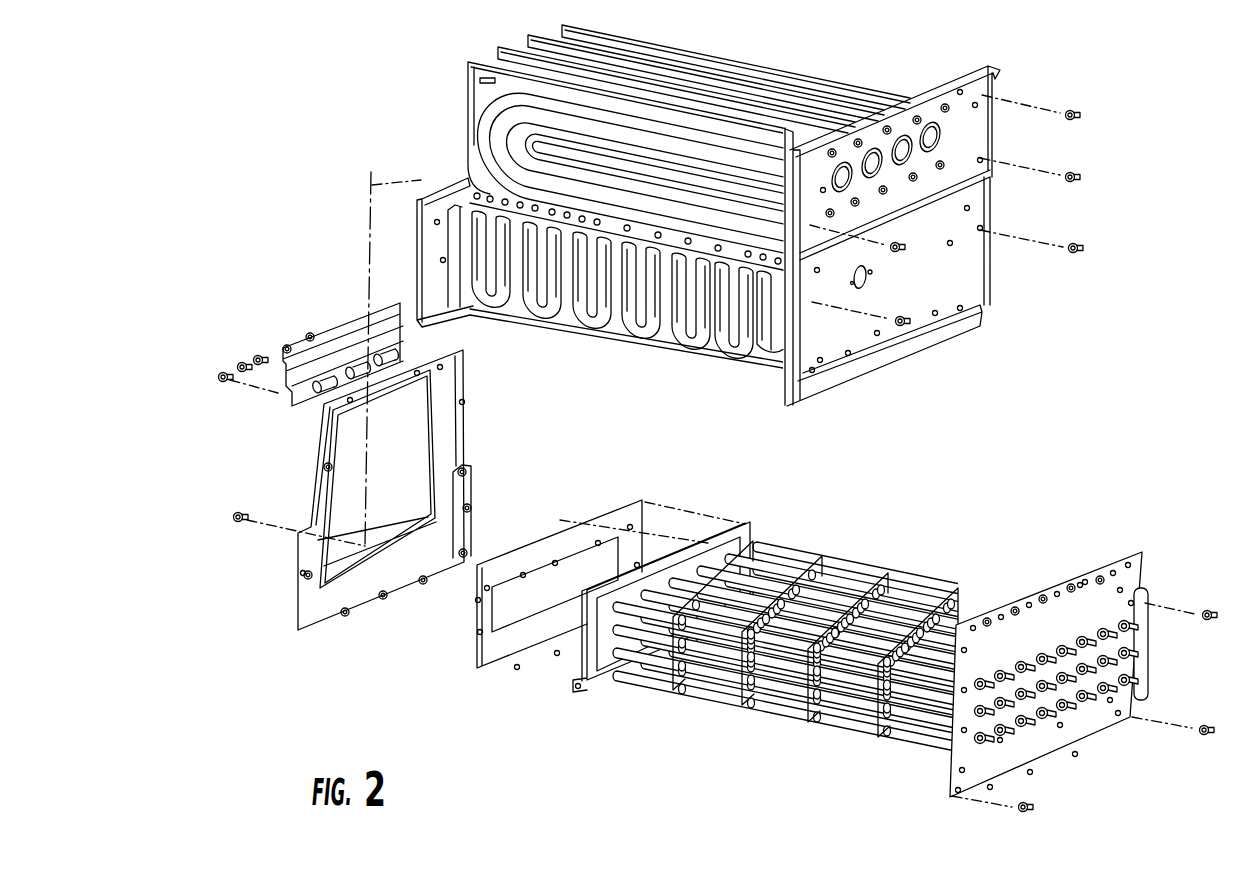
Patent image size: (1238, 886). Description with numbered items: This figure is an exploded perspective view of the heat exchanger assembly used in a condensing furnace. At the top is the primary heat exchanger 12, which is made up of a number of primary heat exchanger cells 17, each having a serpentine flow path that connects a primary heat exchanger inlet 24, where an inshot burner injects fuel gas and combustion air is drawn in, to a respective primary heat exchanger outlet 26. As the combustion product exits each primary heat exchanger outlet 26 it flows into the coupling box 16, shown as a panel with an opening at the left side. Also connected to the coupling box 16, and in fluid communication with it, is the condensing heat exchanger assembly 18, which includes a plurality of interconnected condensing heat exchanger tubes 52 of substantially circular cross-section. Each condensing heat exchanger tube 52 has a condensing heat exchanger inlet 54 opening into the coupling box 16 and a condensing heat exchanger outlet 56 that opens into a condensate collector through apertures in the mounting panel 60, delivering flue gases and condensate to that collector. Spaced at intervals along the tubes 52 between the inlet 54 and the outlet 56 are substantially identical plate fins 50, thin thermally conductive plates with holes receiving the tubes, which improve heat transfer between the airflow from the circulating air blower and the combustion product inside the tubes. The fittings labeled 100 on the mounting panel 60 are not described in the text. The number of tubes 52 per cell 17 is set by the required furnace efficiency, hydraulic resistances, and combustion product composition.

The primary heat exchanger 12 is at (752, 66).
The coupling box 16 is at (313, 496).
The primary heat exchanger cell 17 is at (494, 128).
The condensing heat exchanger assembly 18 is at (847, 678).
The primary heat exchanger inlet 24 is at (945, 140).
The primary heat exchanger outlet 26 is at (485, 257).
The plate fin 50 is at (680, 683).
The condensing heat exchanger tube 52 is at (782, 702).
The condensing heat exchanger inlet 54 is at (573, 680).
The condensing heat exchanger outlet 56 is at (983, 740).
The mounting panel 60 is at (1048, 598).
The fittings 100 is at (1123, 627).